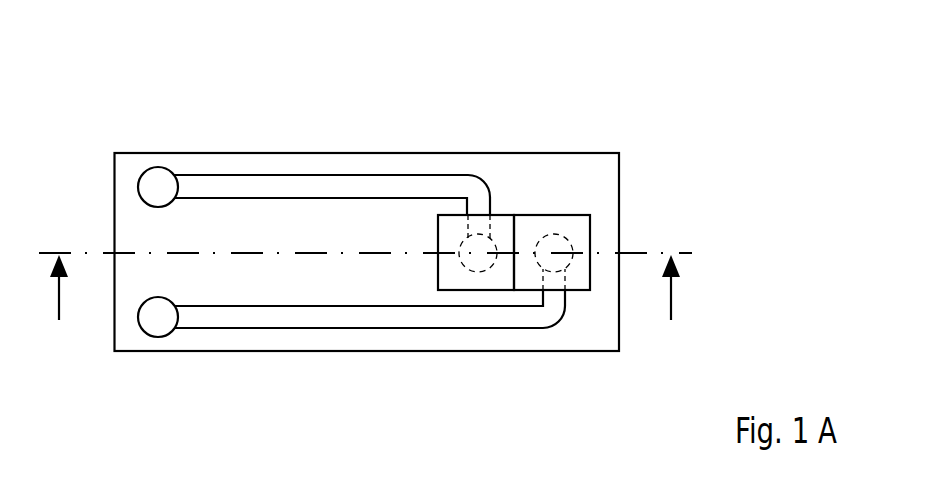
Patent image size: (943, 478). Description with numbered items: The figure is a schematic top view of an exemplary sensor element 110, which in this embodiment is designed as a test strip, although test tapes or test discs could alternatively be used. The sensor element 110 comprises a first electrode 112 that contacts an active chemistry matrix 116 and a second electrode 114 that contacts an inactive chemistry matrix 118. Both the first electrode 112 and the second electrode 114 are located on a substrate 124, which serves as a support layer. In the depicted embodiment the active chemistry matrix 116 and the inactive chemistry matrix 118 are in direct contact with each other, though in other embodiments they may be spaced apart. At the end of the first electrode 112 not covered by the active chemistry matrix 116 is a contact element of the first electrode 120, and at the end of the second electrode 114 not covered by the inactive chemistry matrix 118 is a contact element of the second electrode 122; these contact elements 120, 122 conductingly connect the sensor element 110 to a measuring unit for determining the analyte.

The sensor element 110 is at (403, 218).
The first electrode 112 is at (302, 188).
The second electrode 114 is at (312, 318).
The active chemistry matrix 116 is at (502, 227).
The inactive chemistry matrix 118 is at (577, 227).
The contact element of the first electrode 120 is at (158, 188).
The contact element of the second electrode 122 is at (160, 318).
The substrate 124 is at (582, 331).